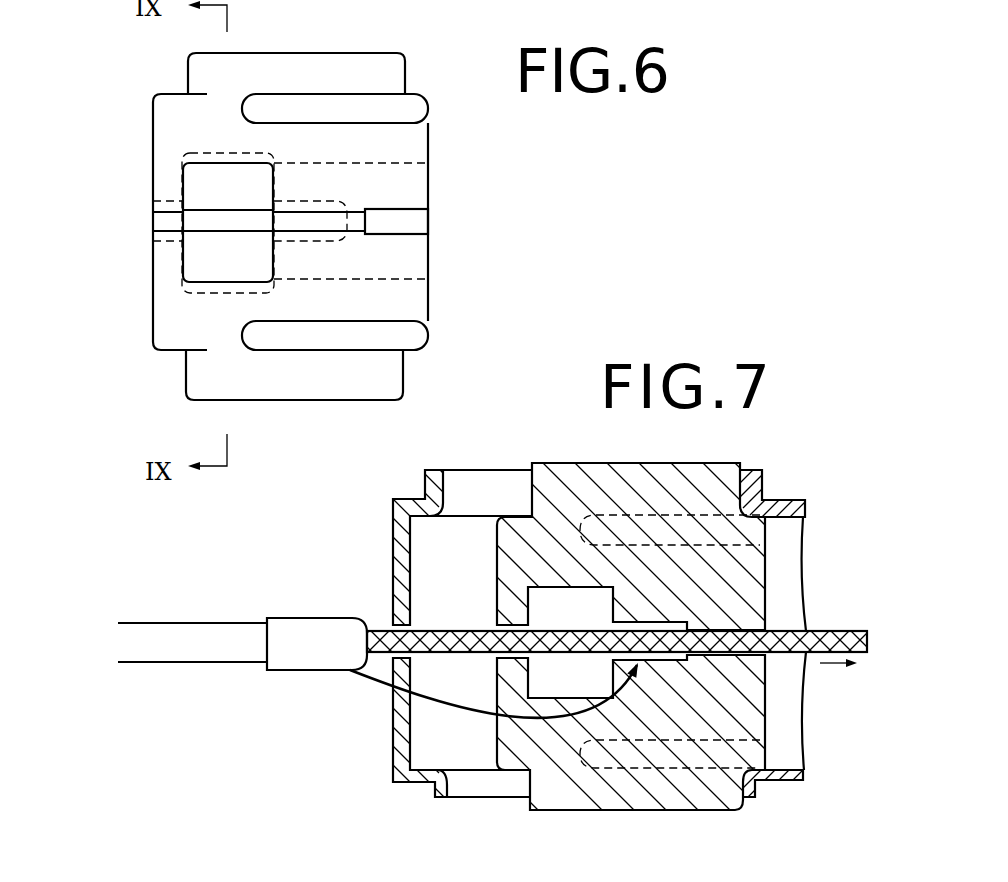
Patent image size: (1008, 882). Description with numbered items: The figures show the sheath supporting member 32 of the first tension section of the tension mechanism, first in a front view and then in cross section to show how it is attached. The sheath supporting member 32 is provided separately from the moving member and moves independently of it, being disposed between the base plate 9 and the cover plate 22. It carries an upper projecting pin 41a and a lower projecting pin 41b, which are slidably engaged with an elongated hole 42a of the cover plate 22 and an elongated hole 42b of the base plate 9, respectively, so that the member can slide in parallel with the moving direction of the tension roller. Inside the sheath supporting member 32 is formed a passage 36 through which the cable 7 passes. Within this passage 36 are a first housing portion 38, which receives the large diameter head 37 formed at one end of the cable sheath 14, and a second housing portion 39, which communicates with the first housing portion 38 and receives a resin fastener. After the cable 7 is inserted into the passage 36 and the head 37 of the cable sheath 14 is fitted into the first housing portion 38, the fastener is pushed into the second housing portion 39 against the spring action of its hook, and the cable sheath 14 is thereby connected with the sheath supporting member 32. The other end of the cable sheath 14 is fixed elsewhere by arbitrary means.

In FIG. 7, the cable 7 is at (838, 630).
In FIG. 7, the base plate 9 is at (397, 782).
In FIG. 7, the cable sheath 14 is at (175, 650).
In FIG. 7, the cover plate 22 is at (798, 508).
In FIG. 6, the sheath supporting member 32 is at (165, 323).
In FIG. 7, the sheath supporting member 32 is at (702, 788).
In FIG. 6, the passage 36 is at (165, 220).
In FIG. 7, the passage 36 is at (703, 677).
In FIG. 7, the large diameter head 37 is at (313, 652).
In FIG. 6, the first housing portion 38 is at (327, 200).
In FIG. 7, the first housing portion 38 is at (667, 660).
In FIG. 6, the second housing portion 39 is at (200, 258).
In FIG. 7, the second housing portion 39 is at (542, 602).
In FIG. 6, the upper projecting pin 41a is at (385, 72).
In FIG. 7, the upper projecting pin 41a is at (725, 485).
In FIG. 6, the lower projecting pin 41b is at (210, 378).
In FIG. 7, the lower projecting pin 41b is at (598, 787).
In FIG. 7, the elongated hole 42a is at (468, 493).
In FIG. 7, the elongated hole 42b is at (468, 782).